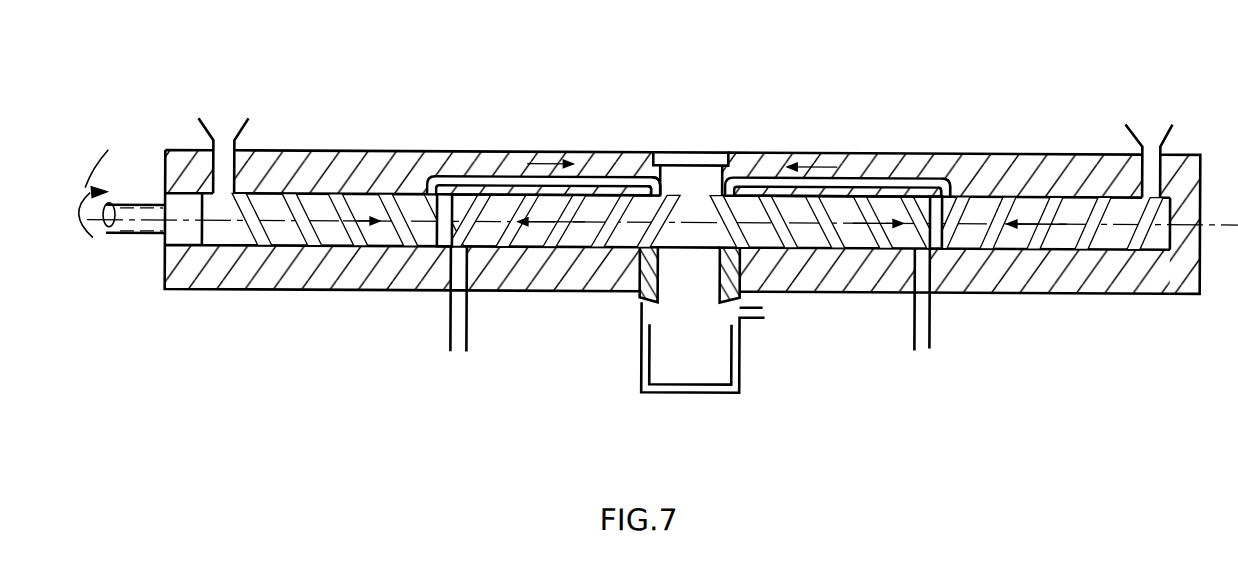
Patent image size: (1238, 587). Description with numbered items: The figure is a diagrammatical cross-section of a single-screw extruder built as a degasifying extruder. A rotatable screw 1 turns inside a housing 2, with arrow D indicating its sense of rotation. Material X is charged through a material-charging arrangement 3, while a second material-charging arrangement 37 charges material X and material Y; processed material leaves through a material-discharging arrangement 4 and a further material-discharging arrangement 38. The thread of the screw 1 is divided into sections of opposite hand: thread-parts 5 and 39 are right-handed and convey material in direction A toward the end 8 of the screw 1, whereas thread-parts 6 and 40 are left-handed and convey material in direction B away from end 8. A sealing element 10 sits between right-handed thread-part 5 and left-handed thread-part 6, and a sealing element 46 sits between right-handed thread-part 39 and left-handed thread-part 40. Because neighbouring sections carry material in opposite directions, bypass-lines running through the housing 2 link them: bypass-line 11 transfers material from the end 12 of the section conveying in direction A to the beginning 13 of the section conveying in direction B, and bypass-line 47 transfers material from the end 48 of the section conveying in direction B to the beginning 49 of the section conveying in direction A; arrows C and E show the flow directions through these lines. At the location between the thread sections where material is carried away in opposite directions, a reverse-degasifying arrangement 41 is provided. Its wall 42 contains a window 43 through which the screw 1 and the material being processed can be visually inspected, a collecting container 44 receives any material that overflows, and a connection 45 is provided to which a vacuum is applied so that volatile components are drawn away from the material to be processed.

The rotatable screw 1 is at (697, 227).
The housing 2 is at (303, 167).
The material-charging arrangement 3 is at (218, 150).
The material-discharging arrangement 4 is at (458, 349).
The right-handed thread-part 5 is at (298, 224).
The left-handed thread-part 6 is at (603, 213).
The end of screw 8 is at (1190, 178).
The sealing element 10 is at (445, 236).
The bypass-line 11 is at (538, 123).
The end of the section 12 is at (415, 212).
The beginning of the section 13 is at (643, 211).
The material-charging arrangement 37 is at (1152, 145).
The material-discharging arrangement 38 is at (922, 334).
The right-handed thread-part 39 is at (815, 220).
The left-handed thread-part 40 is at (1137, 218).
The reverse-degasifying arrangement 41 is at (700, 381).
The wall 42 is at (647, 158).
The window 43 is at (693, 155).
The collecting container 44 is at (667, 365).
The connection 45 is at (763, 310).
The sealing element 46 is at (937, 238).
The bypass-line 47 is at (855, 131).
The end of the section 48 is at (948, 201).
The beginning of the section 49 is at (753, 214).